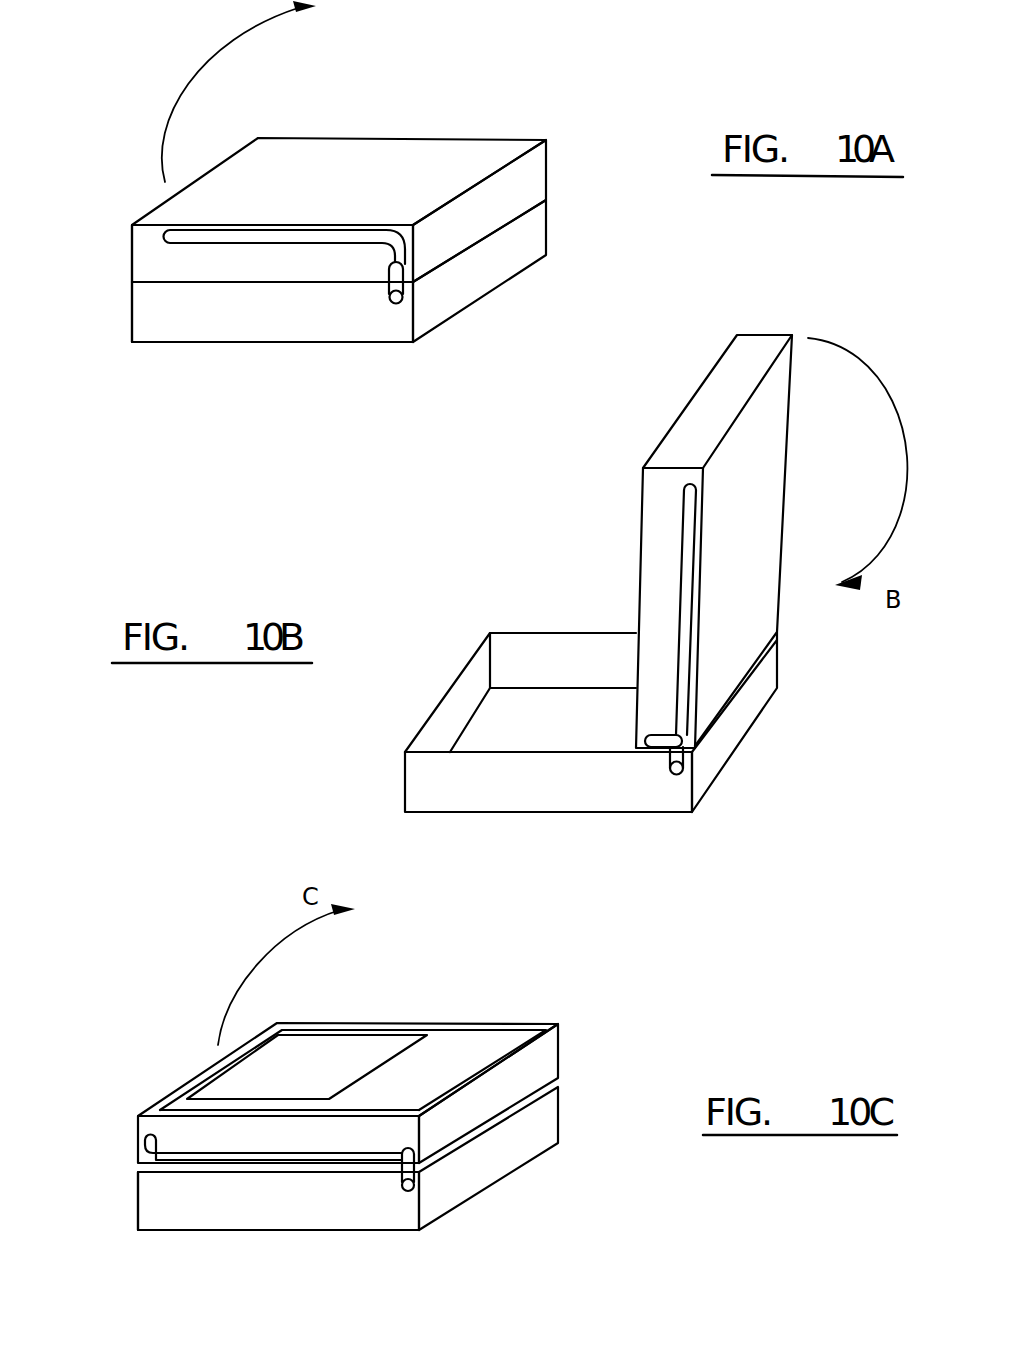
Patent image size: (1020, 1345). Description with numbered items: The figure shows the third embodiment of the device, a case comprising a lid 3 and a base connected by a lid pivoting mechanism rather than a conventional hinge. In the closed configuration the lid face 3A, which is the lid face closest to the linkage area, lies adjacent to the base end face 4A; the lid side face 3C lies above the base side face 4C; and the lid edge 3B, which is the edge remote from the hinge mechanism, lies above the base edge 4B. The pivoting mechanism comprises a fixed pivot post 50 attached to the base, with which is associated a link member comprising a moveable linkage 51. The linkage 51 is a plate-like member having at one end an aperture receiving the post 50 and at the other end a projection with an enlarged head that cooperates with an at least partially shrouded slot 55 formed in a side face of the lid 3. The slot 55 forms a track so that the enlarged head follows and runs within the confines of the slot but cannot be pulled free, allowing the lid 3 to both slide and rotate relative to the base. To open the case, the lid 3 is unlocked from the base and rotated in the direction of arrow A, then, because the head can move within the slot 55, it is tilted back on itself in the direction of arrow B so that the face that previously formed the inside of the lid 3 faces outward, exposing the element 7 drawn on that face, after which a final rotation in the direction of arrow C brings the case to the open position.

In FIG. 10A, the lid 3 is at (335, 176).
In FIG. 10A, the lid face 3A is at (516, 187).
In FIG. 10A, the lid edge 3B is at (132, 250).
In FIG. 10B, the lid edge 3B is at (663, 468).
In FIG. 10C, the lid edge 3B is at (470, 1108).
In FIG. 10A, the lid side face 3C is at (213, 262).
In FIG. 10B, the lid side face 3C is at (657, 577).
In FIG. 10C, the lid side face 3C is at (252, 1137).
In FIG. 10A, the base end face 4A is at (520, 241).
In FIG. 10B, the base end face 4A is at (742, 717).
In FIG. 10C, the base end face 4A is at (507, 1152).
In FIG. 10A, the base edge 4B is at (132, 310).
In FIG. 10B, the base edge 4B is at (405, 792).
In FIG. 10C, the base edge 4B is at (137, 1207).
In FIG. 10A, the base side face 4C is at (332, 315).
In FIG. 10B, the base side face 4C is at (555, 788).
In FIG. 10C, the base side face 4C is at (312, 1200).
In FIG. 10C, the panel 7 is at (313, 1065).
In FIG. 10A, the fixed pivot post 50 is at (403, 300).
In FIG. 10B, the fixed pivot post 50 is at (675, 777).
In FIG. 10B, the moveable linkage 51 is at (678, 752).
In FIG. 10A, the partially shrouded slot 55 is at (282, 238).
In FIG. 10B, the partially shrouded slot 55 is at (688, 532).